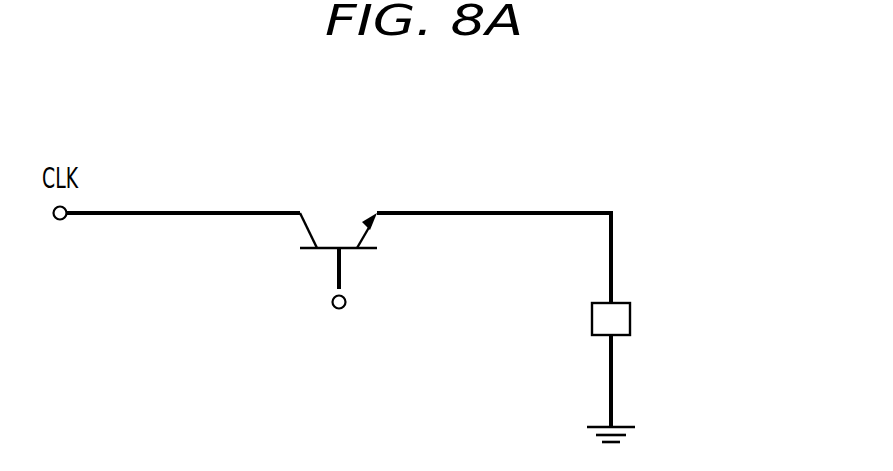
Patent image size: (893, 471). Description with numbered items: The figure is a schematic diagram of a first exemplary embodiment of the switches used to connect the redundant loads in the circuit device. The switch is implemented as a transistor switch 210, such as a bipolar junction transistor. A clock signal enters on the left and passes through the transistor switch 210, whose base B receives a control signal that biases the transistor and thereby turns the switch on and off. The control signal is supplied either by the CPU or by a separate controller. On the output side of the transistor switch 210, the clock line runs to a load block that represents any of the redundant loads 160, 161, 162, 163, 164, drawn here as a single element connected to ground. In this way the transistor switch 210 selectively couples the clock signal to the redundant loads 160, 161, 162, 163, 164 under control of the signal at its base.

The transistor switch 210 is at (339, 213).
The redundant load 160 is at (700, 316).
The redundant load 161 is at (700, 316).
The redundant load 162 is at (700, 327).
The redundant load 163 is at (700, 327).
The redundant load 164 is at (700, 327).